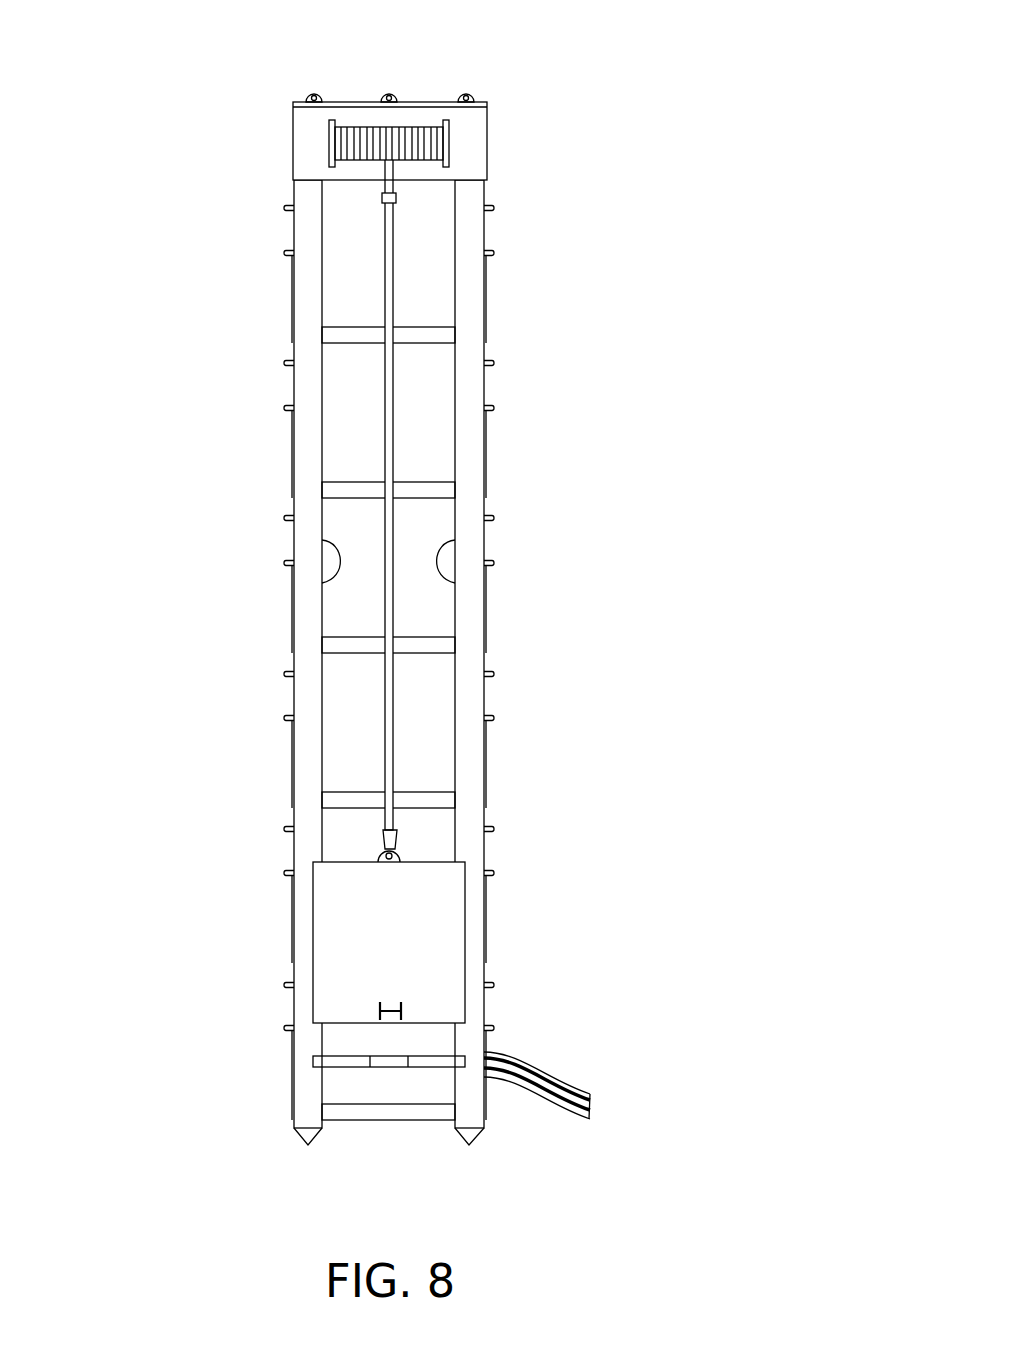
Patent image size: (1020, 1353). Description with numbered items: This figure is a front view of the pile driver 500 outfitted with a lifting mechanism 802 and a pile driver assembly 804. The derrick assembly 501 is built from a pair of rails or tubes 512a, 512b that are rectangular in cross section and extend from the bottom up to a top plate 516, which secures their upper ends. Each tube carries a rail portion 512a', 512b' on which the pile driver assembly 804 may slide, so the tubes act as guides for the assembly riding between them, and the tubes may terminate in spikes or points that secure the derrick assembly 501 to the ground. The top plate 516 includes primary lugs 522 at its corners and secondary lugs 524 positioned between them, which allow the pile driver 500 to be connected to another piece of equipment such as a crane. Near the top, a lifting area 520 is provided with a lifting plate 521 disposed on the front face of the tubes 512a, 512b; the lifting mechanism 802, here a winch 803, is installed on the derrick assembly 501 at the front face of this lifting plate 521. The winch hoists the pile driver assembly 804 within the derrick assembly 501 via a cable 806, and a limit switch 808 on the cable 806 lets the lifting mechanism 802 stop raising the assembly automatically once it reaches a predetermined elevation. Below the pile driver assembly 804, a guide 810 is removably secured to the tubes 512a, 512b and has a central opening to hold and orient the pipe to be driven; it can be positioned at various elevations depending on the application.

The pile driver 500 is at (437, 600).
The derrick assembly 501 is at (405, 662).
The tube 512a is at (228, 662).
The tube 512b is at (549, 662).
The rail portion 512a' is at (249, 573).
The rail portion 512b' is at (533, 573).
The top plate 516 is at (426, 102).
The lifting area 520 is at (276, 183).
The lifting plate 521 is at (302, 170).
The primary lugs 522 is at (312, 94).
The secondary lugs 524 is at (388, 93).
The lifting mechanism 802 is at (393, 120).
The winch 803 is at (342, 150).
The pile driver assembly 804 is at (469, 937).
The cable 806 is at (394, 762).
The limit switch 808 is at (396, 200).
The guide 810 is at (428, 1062).